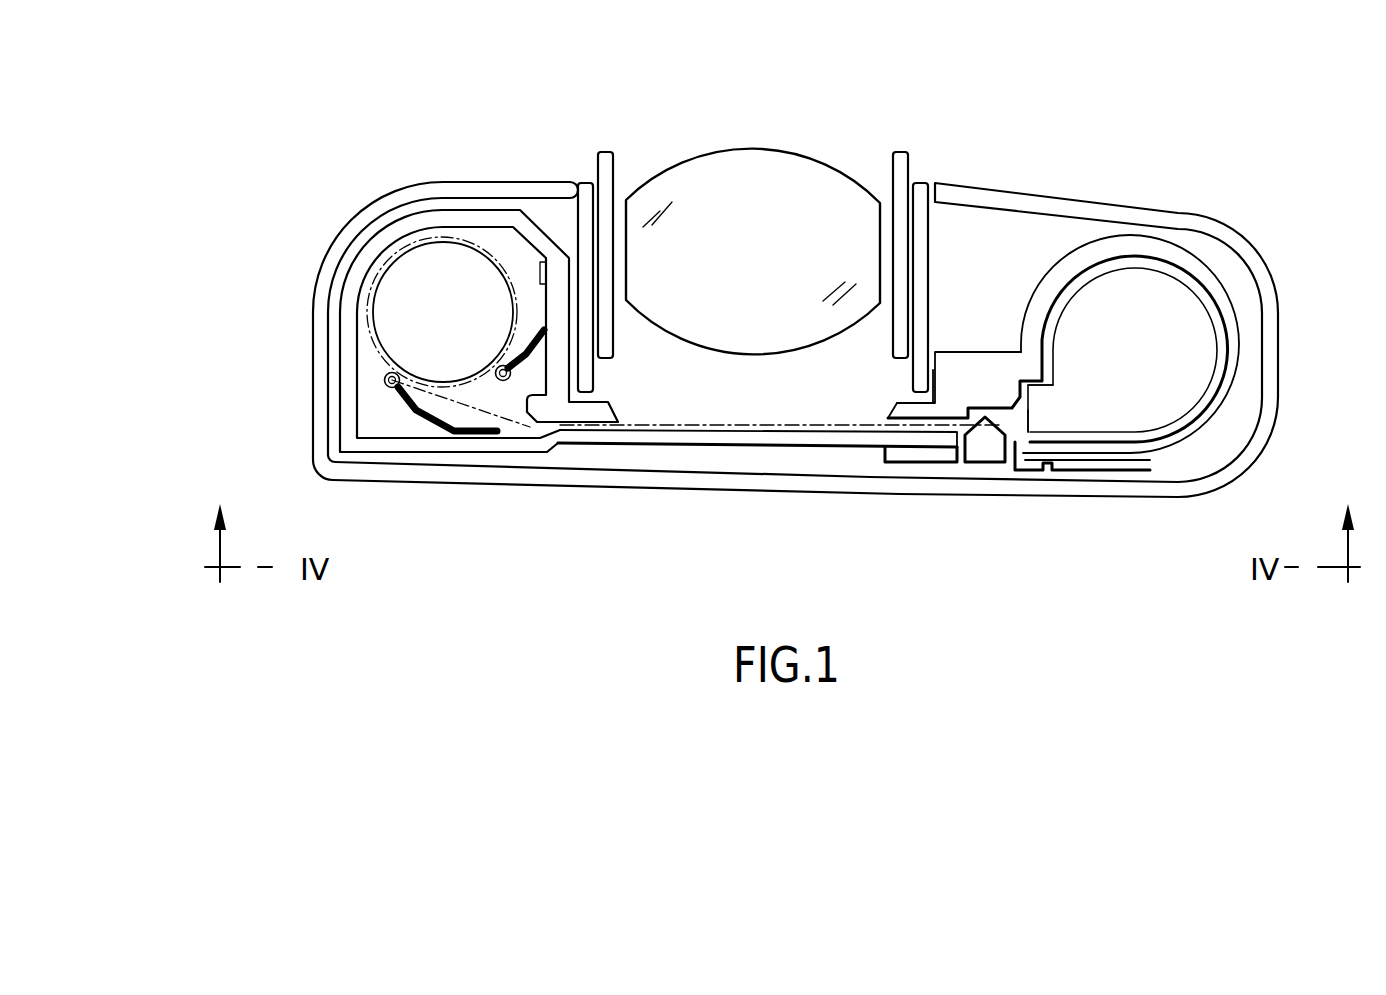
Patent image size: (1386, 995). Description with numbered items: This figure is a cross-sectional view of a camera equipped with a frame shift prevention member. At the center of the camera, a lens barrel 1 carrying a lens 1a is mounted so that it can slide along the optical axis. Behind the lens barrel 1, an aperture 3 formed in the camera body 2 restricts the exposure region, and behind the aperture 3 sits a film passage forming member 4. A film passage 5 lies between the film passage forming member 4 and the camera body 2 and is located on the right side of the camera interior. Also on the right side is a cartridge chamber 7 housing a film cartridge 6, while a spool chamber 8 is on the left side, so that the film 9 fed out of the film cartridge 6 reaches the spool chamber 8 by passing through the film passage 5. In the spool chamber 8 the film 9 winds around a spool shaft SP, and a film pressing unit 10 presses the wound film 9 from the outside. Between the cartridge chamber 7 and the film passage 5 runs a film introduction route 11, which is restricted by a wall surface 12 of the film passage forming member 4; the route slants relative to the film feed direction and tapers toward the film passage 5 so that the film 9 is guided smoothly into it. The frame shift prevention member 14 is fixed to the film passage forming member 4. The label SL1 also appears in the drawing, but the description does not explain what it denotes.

The lens barrel 1 is at (902, 152).
The lens 1a is at (772, 172).
The camera body 2 is at (945, 367).
The aperture 3 is at (780, 428).
The film passage forming member 4 is at (757, 437).
The film passage 5 is at (888, 418).
The film cartridge 6 is at (1180, 417).
The cartridge chamber 7 is at (1224, 367).
The spool chamber 8 is at (367, 354).
The film 9 is at (520, 415).
The film pressing unit 10 is at (540, 282).
The film introduction route 11 is at (1025, 410).
The wall surface 12 is at (1027, 430).
The frame shift prevention member 14 is at (980, 453).
The spool shaft SP is at (408, 288).
The slot SL1 is at (964, 382).